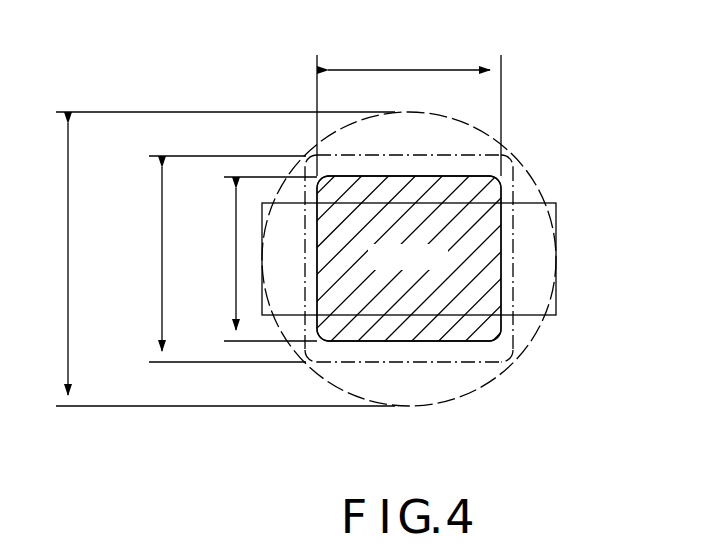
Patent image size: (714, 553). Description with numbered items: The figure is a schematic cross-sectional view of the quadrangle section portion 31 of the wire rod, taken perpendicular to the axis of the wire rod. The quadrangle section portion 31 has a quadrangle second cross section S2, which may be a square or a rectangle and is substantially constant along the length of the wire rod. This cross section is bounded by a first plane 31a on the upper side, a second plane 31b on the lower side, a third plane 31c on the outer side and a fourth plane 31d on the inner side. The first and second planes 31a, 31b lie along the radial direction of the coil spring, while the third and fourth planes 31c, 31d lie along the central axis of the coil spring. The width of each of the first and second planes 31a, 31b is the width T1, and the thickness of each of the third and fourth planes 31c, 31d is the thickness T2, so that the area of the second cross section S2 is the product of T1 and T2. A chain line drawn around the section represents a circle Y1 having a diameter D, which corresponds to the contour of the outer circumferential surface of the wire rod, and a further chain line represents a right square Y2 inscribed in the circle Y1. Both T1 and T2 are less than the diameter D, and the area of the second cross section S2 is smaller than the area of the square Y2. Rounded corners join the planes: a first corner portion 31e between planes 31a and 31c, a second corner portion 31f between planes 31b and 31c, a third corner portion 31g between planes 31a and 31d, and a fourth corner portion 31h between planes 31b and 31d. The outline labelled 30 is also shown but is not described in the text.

The circle (wafer outline) 30 is at (500, 373).
The quadrangle section portion 31 is at (442, 333).
The first plane 31a is at (405, 176).
The second plane 31b is at (408, 342).
The third plane 31c is at (316, 288).
The fourth plane 31d is at (504, 280).
The first corner portion 31e is at (311, 180).
The second corner portion 31f is at (320, 338).
The third corner portion 31g is at (500, 180).
The fourth corner portion 31h is at (503, 341).
The second cross section S2 is at (370, 257).
The circle Y1 is at (522, 175).
The right square Y2 is at (455, 154).
The width T1 is at (406, 70).
The thickness T2 is at (236, 258).
The diameter D is at (65, 258).